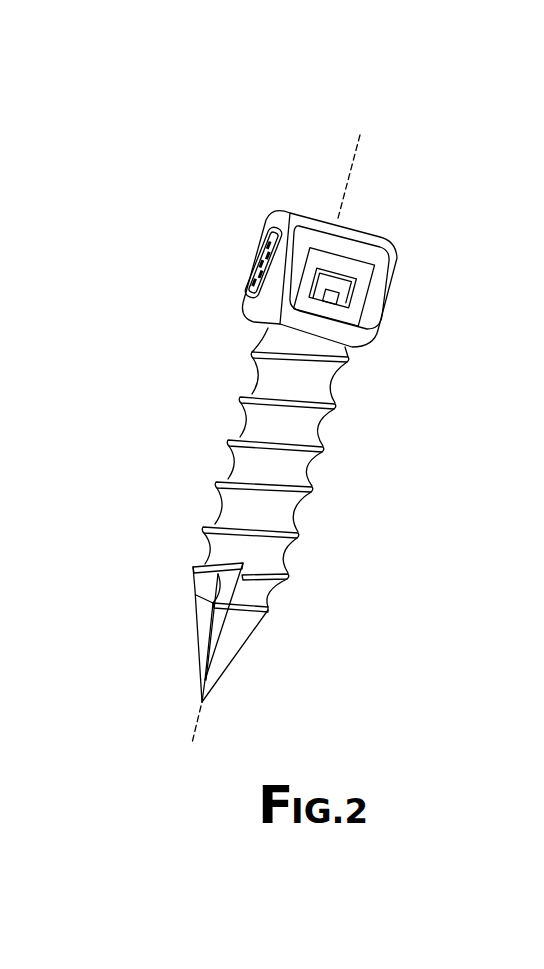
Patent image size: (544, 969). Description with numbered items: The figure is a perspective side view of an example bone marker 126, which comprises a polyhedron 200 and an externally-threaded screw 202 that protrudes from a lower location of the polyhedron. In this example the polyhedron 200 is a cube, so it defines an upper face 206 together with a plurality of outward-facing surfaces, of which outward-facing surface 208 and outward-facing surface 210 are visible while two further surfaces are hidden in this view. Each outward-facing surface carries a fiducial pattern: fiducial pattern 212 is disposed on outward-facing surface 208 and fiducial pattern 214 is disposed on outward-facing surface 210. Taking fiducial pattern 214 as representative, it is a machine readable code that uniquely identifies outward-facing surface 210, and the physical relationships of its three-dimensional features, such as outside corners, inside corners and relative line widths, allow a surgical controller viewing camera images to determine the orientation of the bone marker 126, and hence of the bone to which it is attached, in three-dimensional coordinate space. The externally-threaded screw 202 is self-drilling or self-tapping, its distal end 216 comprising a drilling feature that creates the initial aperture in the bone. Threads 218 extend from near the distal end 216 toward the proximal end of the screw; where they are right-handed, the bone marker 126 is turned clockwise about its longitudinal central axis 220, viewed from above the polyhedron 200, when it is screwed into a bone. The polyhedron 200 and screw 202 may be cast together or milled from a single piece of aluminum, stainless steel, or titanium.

The bone marker 126 is at (98, 168).
The polyhedron 200 is at (284, 196).
The externally-threaded screw 202 is at (205, 500).
The upper face 206 is at (378, 234).
The outward-facing surface 208 is at (270, 223).
The outward-facing surface 210 is at (380, 254).
The fiducial pattern 212 is at (255, 258).
The fiducial pattern 214 is at (350, 297).
The distal end 216 is at (255, 653).
The threads 218 is at (298, 465).
The longitudinal central axis 220 is at (354, 152).